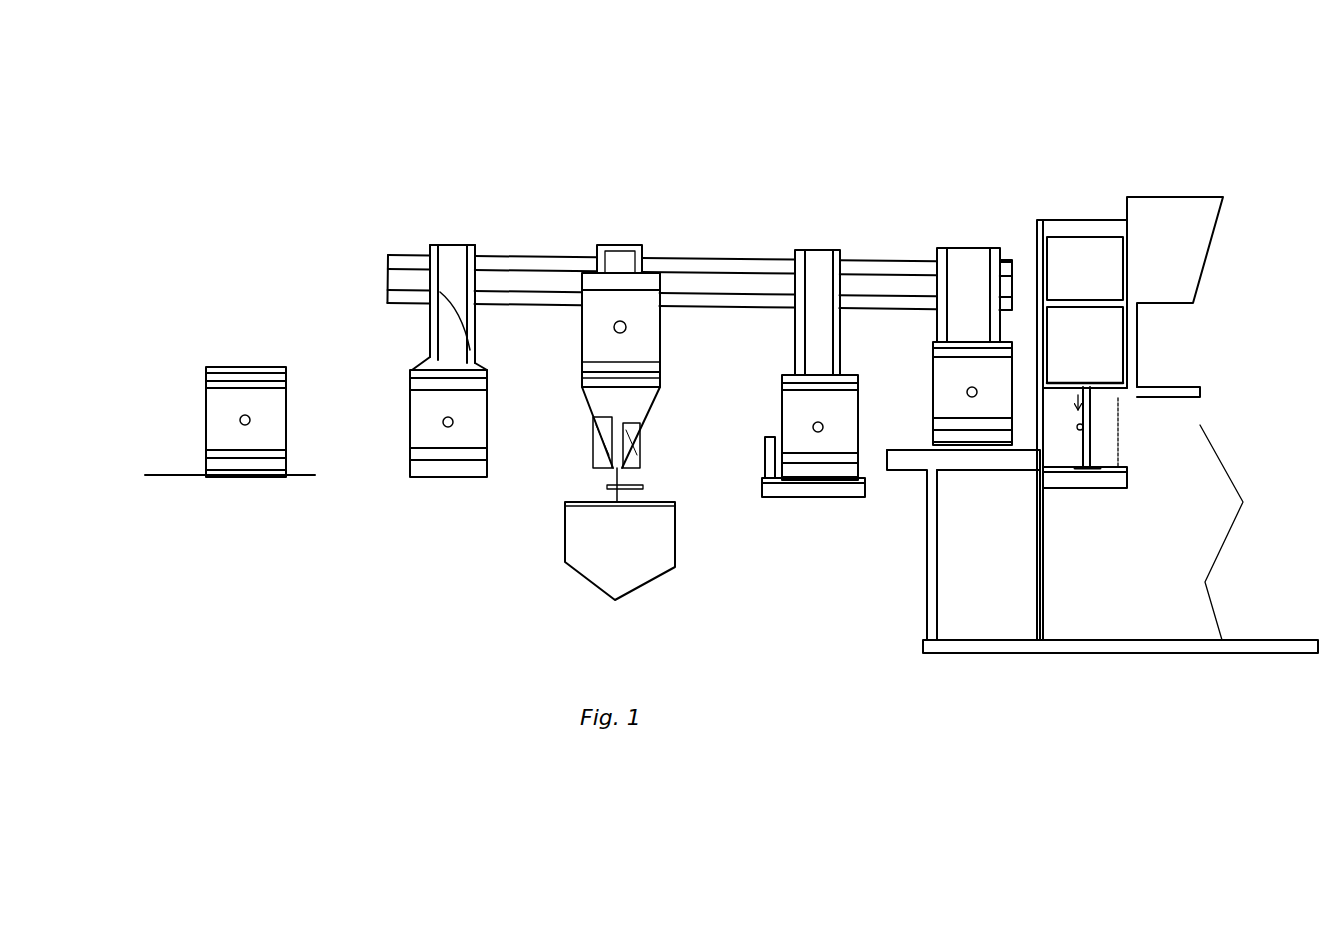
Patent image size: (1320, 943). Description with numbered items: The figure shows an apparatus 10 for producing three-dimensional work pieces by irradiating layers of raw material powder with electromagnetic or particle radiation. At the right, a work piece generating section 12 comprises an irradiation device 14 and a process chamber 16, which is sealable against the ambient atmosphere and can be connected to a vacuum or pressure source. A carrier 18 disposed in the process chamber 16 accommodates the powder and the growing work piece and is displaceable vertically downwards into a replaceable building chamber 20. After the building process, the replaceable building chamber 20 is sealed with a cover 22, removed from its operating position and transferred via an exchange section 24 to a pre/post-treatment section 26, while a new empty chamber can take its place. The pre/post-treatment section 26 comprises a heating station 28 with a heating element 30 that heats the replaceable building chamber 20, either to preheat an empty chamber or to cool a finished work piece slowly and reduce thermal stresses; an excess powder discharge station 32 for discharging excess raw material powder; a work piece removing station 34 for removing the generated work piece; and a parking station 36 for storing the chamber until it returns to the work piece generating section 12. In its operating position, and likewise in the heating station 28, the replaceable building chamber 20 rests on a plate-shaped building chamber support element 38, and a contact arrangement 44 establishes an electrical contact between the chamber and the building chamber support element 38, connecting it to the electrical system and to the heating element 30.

The apparatus 10 is at (1207, 148).
The work piece generating section 12 is at (1070, 165).
The irradiation device 14 is at (1118, 262).
The process chamber 16 is at (1112, 337).
The carrier 18 is at (1093, 384).
The replaceable building chamber 20 is at (278, 422).
The cover 22 is at (1190, 393).
The exchange section 24 is at (993, 217).
The pre/post-treatment section 26 is at (787, 125).
The heating station 28 is at (815, 225).
The heating element 30 is at (657, 327).
The excess powder discharge station 32 is at (622, 218).
The work piece removing station 34 is at (463, 218).
The parking station 36 is at (243, 325).
The building chamber support element 38 is at (810, 492).
The contact arrangement 44 is at (843, 487).